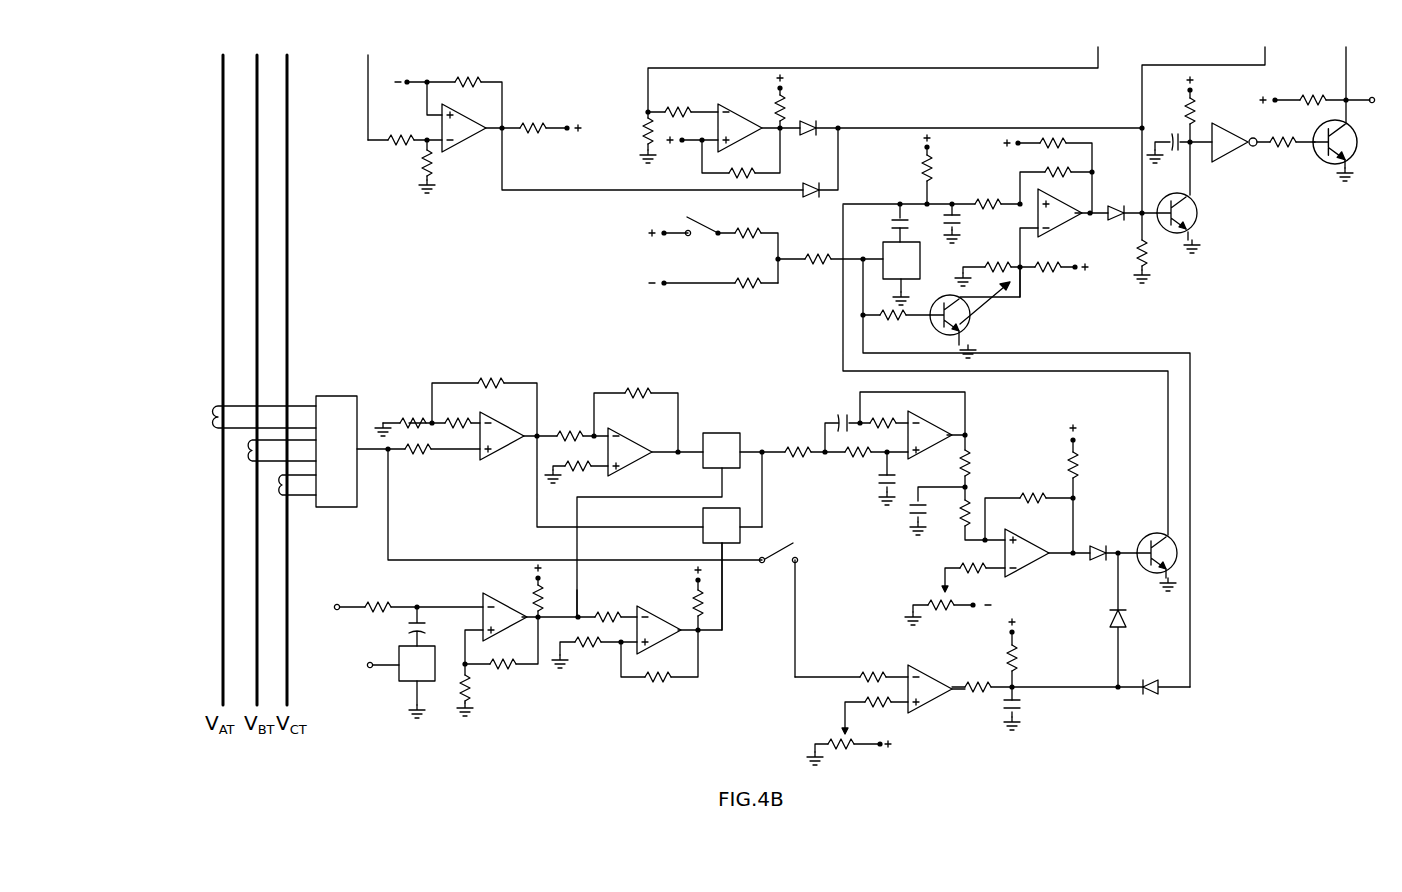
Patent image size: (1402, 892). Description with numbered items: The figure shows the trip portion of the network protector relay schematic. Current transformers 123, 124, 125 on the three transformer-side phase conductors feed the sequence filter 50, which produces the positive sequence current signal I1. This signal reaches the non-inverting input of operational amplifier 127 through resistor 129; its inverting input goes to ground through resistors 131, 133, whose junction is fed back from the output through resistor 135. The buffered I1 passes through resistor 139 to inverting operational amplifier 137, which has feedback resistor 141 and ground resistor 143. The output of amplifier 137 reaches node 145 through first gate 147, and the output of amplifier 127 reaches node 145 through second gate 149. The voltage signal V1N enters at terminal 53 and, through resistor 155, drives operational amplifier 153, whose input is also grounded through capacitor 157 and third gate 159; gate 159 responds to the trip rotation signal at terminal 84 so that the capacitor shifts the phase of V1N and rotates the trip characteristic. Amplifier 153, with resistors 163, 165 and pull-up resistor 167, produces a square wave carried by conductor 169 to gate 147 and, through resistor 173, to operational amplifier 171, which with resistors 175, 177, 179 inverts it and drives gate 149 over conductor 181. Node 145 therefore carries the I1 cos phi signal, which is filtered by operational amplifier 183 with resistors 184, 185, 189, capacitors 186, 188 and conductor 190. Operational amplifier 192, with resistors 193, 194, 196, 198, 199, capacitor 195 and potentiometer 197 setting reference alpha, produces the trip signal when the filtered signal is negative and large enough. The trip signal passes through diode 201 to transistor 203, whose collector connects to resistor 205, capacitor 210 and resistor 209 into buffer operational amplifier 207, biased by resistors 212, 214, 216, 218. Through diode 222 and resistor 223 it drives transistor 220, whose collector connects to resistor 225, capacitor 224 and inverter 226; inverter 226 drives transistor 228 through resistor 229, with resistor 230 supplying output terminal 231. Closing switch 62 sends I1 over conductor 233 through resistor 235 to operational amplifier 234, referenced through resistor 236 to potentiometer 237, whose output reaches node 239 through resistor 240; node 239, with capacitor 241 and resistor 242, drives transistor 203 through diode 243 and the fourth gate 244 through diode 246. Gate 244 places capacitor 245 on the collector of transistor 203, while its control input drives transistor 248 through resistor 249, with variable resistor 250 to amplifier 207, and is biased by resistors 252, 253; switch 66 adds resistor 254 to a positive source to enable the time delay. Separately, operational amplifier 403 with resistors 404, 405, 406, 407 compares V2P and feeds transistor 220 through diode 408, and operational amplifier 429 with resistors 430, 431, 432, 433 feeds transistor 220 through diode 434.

The sequence filter 50 is at (327, 396).
The terminal 53 is at (340, 604).
The switch 62 is at (799, 559).
The switch 66 is at (688, 236).
The terminal 84 is at (362, 664).
The current transformer 123 is at (212, 412).
The current transformer 124 is at (250, 462).
The current transformer 125 is at (280, 498).
The operational amplifier 127 is at (490, 416).
The resistor 129 is at (422, 453).
The resistor 131 is at (442, 420).
The resistor 133 is at (405, 420).
The resistor 135 is at (491, 382).
The operational amplifier 137 is at (626, 434).
The resistor 139 is at (582, 428).
The resistor 141 is at (636, 393).
The resistor 143 is at (569, 474).
The node 145 is at (754, 449).
The first gate 147 is at (728, 430).
The second gate 149 is at (696, 524).
The operational amplifier 153 is at (490, 598).
The resistor 155 is at (378, 605).
The capacitor 157 is at (404, 632).
The third gate 159 is at (397, 682).
The resistor 163 is at (474, 694).
The resistor 165 is at (496, 661).
The resistor 167 is at (548, 604).
The conductor 169 is at (578, 590).
The operational amplifier 171 is at (655, 650).
The resistor 173 is at (619, 604).
The resistor 175 is at (605, 660).
The resistor 177 is at (670, 682).
The resistor 179 is at (692, 594).
The conductor 181 is at (724, 592).
The operational amplifier 183 is at (920, 422).
The resistor 184 is at (808, 440).
The resistor 185 is at (846, 454).
The capacitor 186 is at (879, 481).
The capacitor 188 is at (836, 413).
The resistor 189 is at (894, 408).
The conductor 190 is at (958, 392).
The operational amplifier 192 is at (1012, 535).
The resistor 193 is at (962, 466).
The resistor 194 is at (970, 504).
The capacitor 195 is at (900, 521).
The resistor 196 is at (969, 558).
The potentiometer 197 is at (936, 596).
The resistor 198 is at (1016, 495).
The resistor 199 is at (1084, 460).
The diode 201 is at (1086, 544).
The transistor 203 is at (1137, 537).
The resistor 205 is at (919, 166).
The operational amplifier 207 is at (1050, 198).
The resistor 209 is at (992, 194).
The capacitor 210 is at (962, 224).
The resistor 212 is at (1050, 168).
The resistor 214 is at (1078, 142).
The resistor 216 is at (1002, 258).
The resistor 218 is at (1040, 266).
The transistor 220 is at (1177, 186).
The diode 222 is at (1114, 206).
The resistor 223 is at (1152, 250).
The capacitor 224 is at (1180, 128).
The resistor 225 is at (1194, 110).
The inverter 226 is at (1232, 164).
The transistor 228 is at (1332, 154).
The resistor 229 is at (1274, 134).
The resistor 230 is at (1324, 88).
The output terminal 231 is at (1360, 92).
The conductor 233 is at (797, 646).
The operational amplifier 234 is at (926, 670).
The resistor 235 is at (874, 666).
The resistor 236 is at (868, 694).
The potentiometer 237 is at (834, 740).
The node 239 is at (1016, 682).
The resistor 240 is at (958, 682).
The capacitor 241 is at (1024, 704).
The resistor 242 is at (1020, 648).
The diode 243 is at (1140, 608).
The fourth gate 244 is at (884, 246).
The capacitor 245 is at (884, 222).
The diode 246 is at (1148, 680).
The transistor 248 is at (946, 336).
The resistor 249 is at (902, 322).
The variable resistor 250 is at (997, 306).
The resistor 252 is at (824, 248).
The resistor 253 is at (740, 296).
The resistor 254 is at (736, 226).
The operational amplifier 403 is at (462, 152).
The resistor 404 is at (414, 136).
The resistor 405 is at (419, 171).
The resistor 406 is at (447, 73).
The resistor 407 is at (526, 120).
The diode 408 is at (830, 168).
The operational amplifier 429 is at (740, 104).
The resistor 430 is at (690, 102).
The resistor 431 is at (640, 146).
The resistor 432 is at (740, 152).
The resistor 433 is at (788, 92).
The diode 434 is at (822, 116).